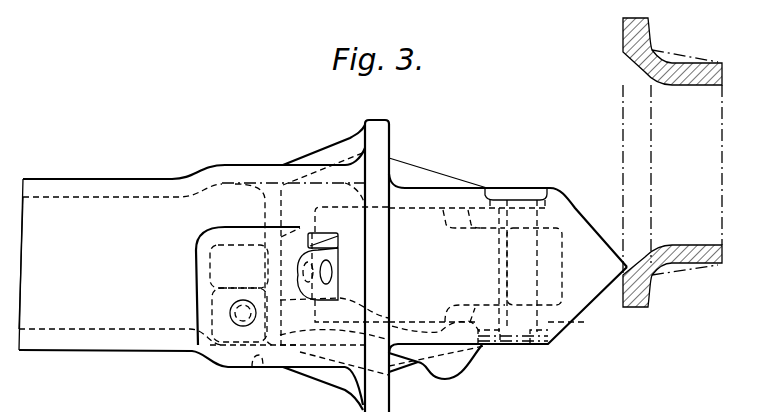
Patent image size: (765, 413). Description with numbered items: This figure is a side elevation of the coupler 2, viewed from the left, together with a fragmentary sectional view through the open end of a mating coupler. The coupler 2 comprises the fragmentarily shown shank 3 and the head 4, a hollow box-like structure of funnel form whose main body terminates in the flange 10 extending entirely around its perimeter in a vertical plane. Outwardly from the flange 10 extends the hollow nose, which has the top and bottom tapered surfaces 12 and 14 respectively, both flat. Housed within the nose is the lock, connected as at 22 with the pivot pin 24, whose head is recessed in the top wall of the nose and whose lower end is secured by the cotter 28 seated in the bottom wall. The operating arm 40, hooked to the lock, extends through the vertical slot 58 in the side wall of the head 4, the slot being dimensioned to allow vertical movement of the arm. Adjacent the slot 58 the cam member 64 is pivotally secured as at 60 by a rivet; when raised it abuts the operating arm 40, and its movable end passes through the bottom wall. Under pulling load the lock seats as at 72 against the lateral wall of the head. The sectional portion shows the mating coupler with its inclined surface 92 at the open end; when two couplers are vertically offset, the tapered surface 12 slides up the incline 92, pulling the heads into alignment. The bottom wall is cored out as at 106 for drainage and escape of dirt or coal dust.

The coupler 2 is at (103, 172).
The shank 3 is at (46, 208).
The head 4 is at (281, 176).
The flange 10 is at (378, 123).
The top tapered surface 12 is at (596, 300).
The bottom tapered surface 14 is at (588, 215).
The connection of lock with pivot pin 22 is at (517, 196).
The pivot pin 24 is at (499, 258).
The cotter 28 is at (547, 346).
The operating arm 40 is at (314, 292).
The vertical slot 58 is at (312, 233).
The pivotal securing point 60 is at (241, 316).
The cam member 64 is at (455, 378).
The lock seat 72 is at (558, 268).
The inclined surface 92 is at (650, 262).
The cored-out drainage opening 106 is at (256, 367).